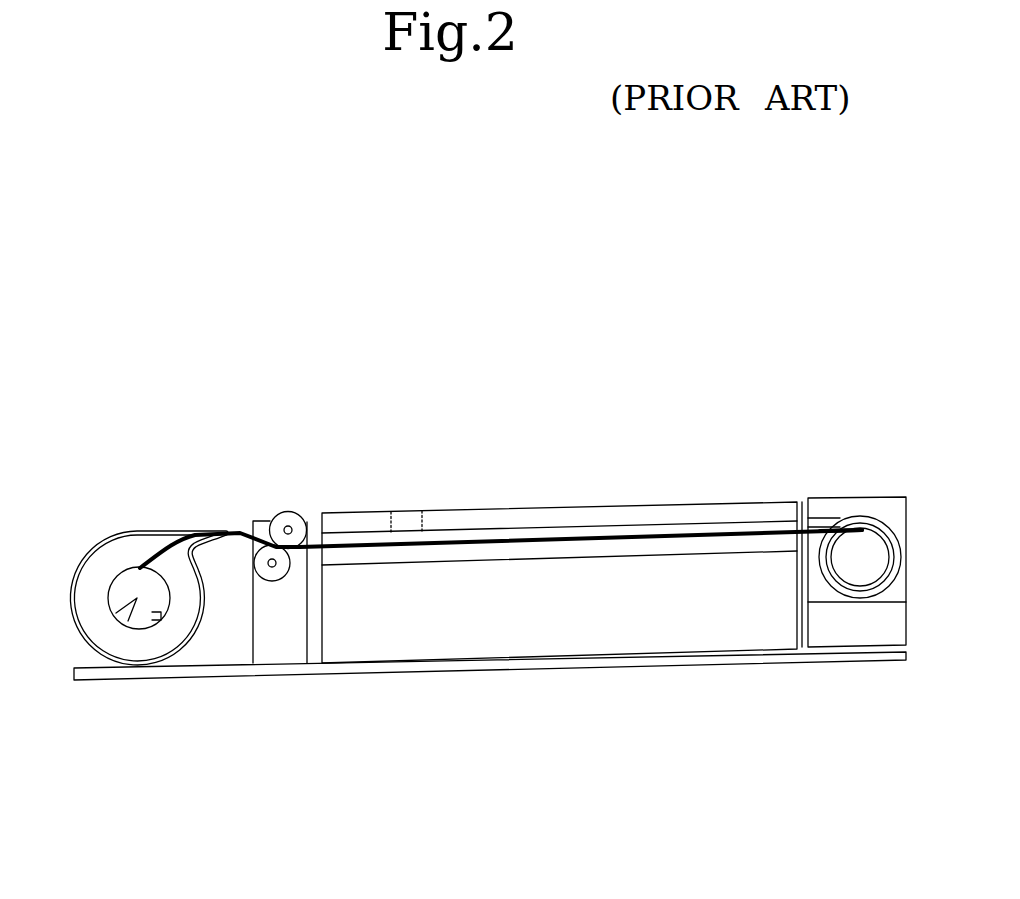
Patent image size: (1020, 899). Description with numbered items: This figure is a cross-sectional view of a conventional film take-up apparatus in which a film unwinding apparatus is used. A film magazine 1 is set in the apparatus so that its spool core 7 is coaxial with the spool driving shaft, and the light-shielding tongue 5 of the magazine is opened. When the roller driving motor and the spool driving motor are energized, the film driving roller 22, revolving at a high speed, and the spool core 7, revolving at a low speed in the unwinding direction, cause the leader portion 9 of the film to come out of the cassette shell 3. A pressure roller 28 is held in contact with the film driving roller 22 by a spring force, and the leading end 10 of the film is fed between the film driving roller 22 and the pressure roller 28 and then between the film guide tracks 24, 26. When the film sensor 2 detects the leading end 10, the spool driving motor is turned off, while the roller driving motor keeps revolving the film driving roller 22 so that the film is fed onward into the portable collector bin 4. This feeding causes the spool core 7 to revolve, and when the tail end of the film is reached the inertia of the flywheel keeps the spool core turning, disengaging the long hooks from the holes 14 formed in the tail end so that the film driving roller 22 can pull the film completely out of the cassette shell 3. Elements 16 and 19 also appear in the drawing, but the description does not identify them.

The film magazine 1 is at (88, 637).
The film sensor 2 is at (405, 523).
The cassette shell 3 is at (65, 542).
The portable collector bin 4 is at (826, 496).
The light-shielding tongue 5 is at (230, 515).
The spool core 7 is at (150, 624).
The leader portion 9 is at (887, 520).
The leading end 10 is at (835, 533).
The holes 14 is at (160, 562).
The core key 16 is at (243, 720).
The core shaft 19 is at (126, 598).
The film driving roller 22 is at (575, 773).
The film guide track 24 is at (592, 515).
The film guide track 26 is at (645, 730).
The pressure roller 28 is at (297, 513).